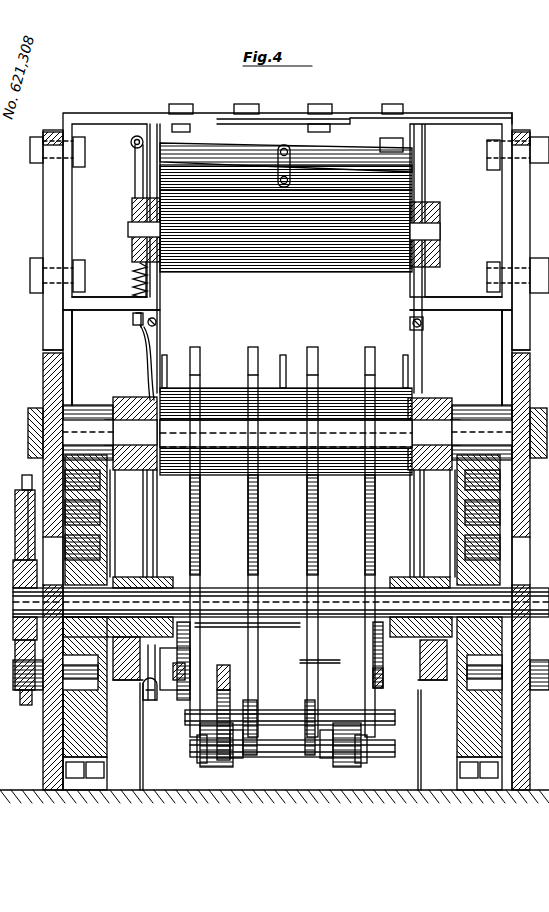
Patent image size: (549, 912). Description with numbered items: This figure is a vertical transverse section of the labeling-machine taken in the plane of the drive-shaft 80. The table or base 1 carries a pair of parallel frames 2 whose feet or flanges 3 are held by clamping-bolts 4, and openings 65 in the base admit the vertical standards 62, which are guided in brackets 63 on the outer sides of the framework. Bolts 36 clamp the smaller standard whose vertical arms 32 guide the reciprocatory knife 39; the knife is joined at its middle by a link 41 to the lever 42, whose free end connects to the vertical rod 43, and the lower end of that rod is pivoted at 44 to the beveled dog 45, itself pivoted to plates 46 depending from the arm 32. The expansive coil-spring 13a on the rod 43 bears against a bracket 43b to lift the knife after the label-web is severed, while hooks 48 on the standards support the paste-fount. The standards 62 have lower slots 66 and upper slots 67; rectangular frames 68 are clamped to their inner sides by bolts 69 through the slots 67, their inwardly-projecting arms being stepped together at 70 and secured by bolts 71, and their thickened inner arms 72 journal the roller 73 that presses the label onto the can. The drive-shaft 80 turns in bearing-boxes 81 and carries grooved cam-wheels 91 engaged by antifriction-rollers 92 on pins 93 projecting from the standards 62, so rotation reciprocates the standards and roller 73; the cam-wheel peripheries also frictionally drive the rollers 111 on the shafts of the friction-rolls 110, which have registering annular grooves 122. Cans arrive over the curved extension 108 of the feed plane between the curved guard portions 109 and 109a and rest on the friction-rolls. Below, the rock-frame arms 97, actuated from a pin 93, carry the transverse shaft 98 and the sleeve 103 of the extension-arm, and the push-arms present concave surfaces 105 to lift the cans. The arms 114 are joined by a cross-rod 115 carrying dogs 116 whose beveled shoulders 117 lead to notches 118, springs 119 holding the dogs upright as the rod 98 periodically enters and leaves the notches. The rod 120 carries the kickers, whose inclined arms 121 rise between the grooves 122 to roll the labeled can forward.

The table or base 1 is at (271, 783).
The parallel frames 2 is at (282, 523).
The feet or flanges 3 is at (282, 774).
The clamping-bolts 4 is at (450, 752).
The expansive coil-spring 13a is at (148, 283).
The vertical arms 32 is at (158, 326).
The bolts 36 is at (135, 685).
The reciprocatory knife 39 is at (286, 177).
The link 41 is at (280, 155).
The lever 42 is at (286, 157).
The vertical rod 43 is at (140, 340).
The bracket 43b is at (116, 331).
The pivotal connection 44 is at (145, 700).
The beveled dog 45 is at (150, 702).
The plates 46 is at (162, 690).
The upwardly-disposed hooks 48 is at (135, 171).
The vertical standards 62 is at (43, 371).
The brackets 63 is at (28, 431).
The openings 65 is at (40, 790).
The vertical slots 66 is at (480, 580).
The vertical slots 67 is at (53, 212).
The rectangular frames 68 is at (287, 357).
The bolts 69 is at (30, 150).
The stepped joint 70 is at (352, 118).
The bolts 71 is at (186, 108).
The thickened inner arms 72 is at (132, 214).
The roller 73 is at (286, 231).
The drive-shaft 80 is at (281, 602).
The bearing-boxes 81 is at (119, 583).
The grooved cam-wheels 91 is at (107, 507).
The antifriction-rollers 92 is at (282, 687).
The pins 93 is at (281, 682).
The parallel arms 97 is at (216, 665).
The transverse shaft 98 is at (247, 637).
The sleeve 103 is at (190, 648).
The concave surfaces 105 is at (200, 349).
The curved extension 108 is at (286, 408).
The curved guard portions 109 is at (284, 366).
The curved partition portion 109a is at (283, 360).
The friction-rolls 110 is at (286, 429).
The rollers 111 is at (82, 406).
The arms 114 is at (301, 663).
The cross-rod 115 is at (282, 757).
The dogs 116 is at (215, 768).
The beveled shoulders 117 is at (212, 700).
The recesses or notches 118 is at (200, 745).
The springs 119 is at (328, 760).
The rod 120 is at (278, 710).
The kicker arms 121 is at (248, 546).
The annular grooves 122 is at (190, 416).